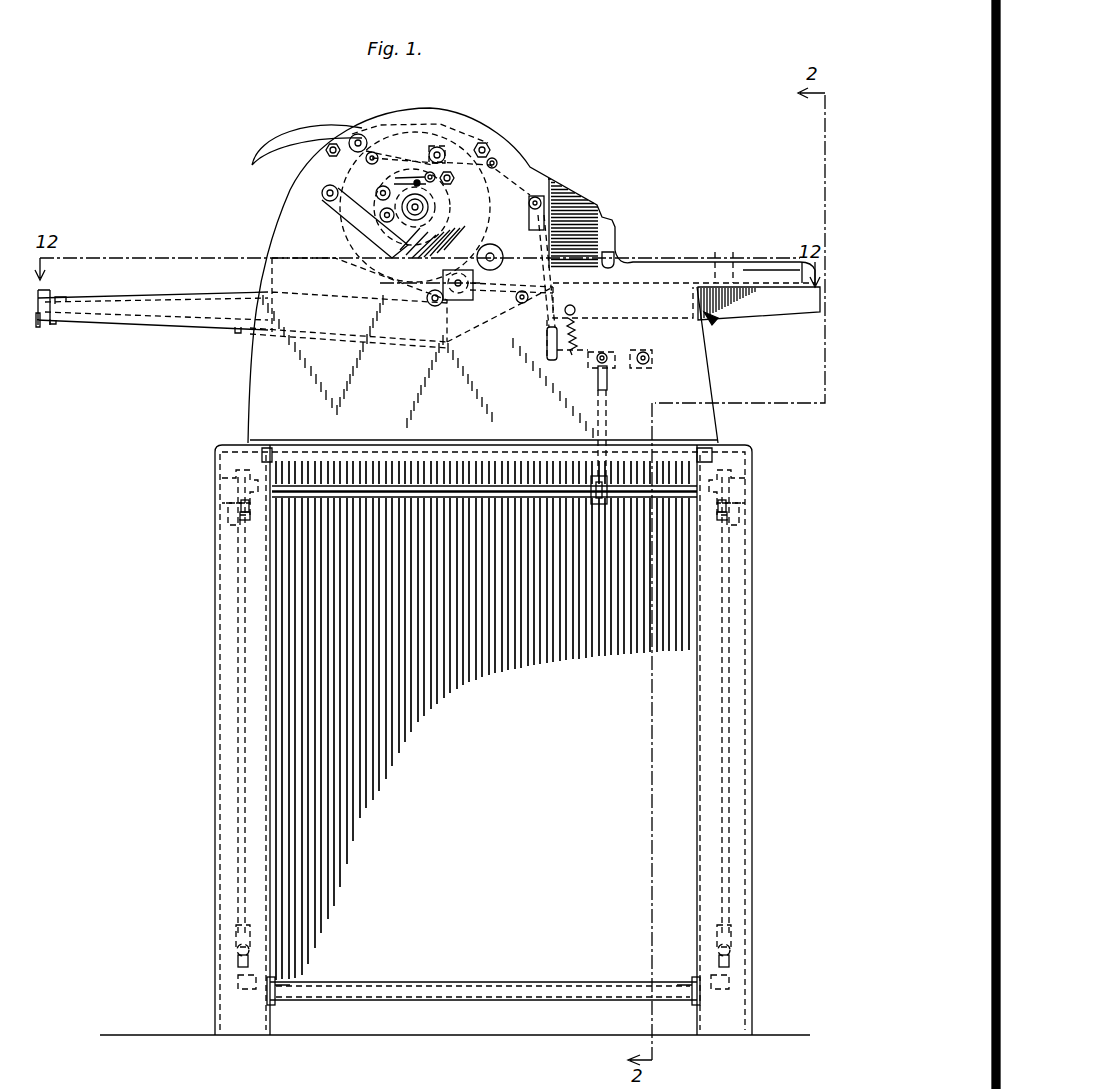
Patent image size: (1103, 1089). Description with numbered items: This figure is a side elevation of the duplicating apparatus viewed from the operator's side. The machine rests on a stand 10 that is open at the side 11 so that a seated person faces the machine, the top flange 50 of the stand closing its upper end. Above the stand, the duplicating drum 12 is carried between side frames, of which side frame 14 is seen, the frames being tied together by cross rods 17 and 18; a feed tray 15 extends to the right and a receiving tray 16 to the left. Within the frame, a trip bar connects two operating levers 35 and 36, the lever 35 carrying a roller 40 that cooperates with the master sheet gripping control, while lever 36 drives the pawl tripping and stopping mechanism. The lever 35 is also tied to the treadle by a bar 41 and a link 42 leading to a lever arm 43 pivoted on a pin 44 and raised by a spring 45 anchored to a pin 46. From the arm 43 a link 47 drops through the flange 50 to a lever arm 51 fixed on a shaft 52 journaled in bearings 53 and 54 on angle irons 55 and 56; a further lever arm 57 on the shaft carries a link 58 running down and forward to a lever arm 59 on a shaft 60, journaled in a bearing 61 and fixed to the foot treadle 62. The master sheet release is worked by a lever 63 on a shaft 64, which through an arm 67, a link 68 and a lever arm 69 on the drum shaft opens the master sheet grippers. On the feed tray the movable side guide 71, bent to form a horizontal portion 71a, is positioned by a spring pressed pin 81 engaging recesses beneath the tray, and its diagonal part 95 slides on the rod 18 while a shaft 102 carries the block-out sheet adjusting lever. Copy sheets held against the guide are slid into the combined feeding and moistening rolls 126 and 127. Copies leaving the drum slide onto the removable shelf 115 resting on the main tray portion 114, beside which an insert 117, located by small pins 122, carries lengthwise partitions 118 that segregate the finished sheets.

The stand 10 is at (206, 749).
The open side of stand 11 is at (293, 640).
The duplicating drum 12 is at (342, 244).
The side frame 14 is at (256, 405).
The feed tray 15 is at (770, 313).
The receiving tray 16 is at (160, 325).
The cross rod 17 is at (332, 158).
The cross rod 18 is at (488, 142).
The operating lever 35 is at (439, 185).
The operating lever 36 is at (498, 160).
The roller 40 is at (426, 207).
The bar 41 is at (535, 196).
The link 42 is at (487, 303).
The lever arm 43 is at (615, 366).
The pin 44 is at (646, 352).
The spring 45 is at (576, 336).
The pin 46 is at (576, 308).
The link 47 is at (607, 412).
The top flange of stand 50 is at (728, 444).
The lever arm 51 is at (607, 496).
The shaft 52 is at (482, 492).
The bearing 53 is at (222, 482).
The bearing 54 is at (745, 490).
The angle iron 55 is at (226, 514).
The angle iron 56 is at (745, 520).
The lever arm 57 is at (270, 512).
The link 58 is at (240, 672).
The lever arm 59 is at (240, 975).
The shaft 60 is at (256, 1000).
The bearing 61 is at (278, 1005).
The foot treadle 62 is at (508, 980).
The lever 63 is at (298, 128).
The shaft 64 is at (362, 133).
The arm 67 is at (372, 150).
The link 68 is at (418, 151).
The lever arm 69 is at (441, 153).
The movable side guide 71 is at (788, 262).
The horizontal portion 71a is at (727, 258).
The spring pressed pin 81 is at (712, 323).
The upwardly and diagonally extending part 95 is at (570, 200).
The shaft 102 is at (616, 258).
The main tray portion 114 is at (222, 334).
The removable ledge or shelf 115 is at (401, 303).
The insert 117 is at (76, 288).
The partitions 118 is at (207, 297).
The pins 122 is at (53, 324).
The combined feeding and moistening roll 126 is at (497, 247).
The combined feeding and moistening roll 127 is at (482, 300).